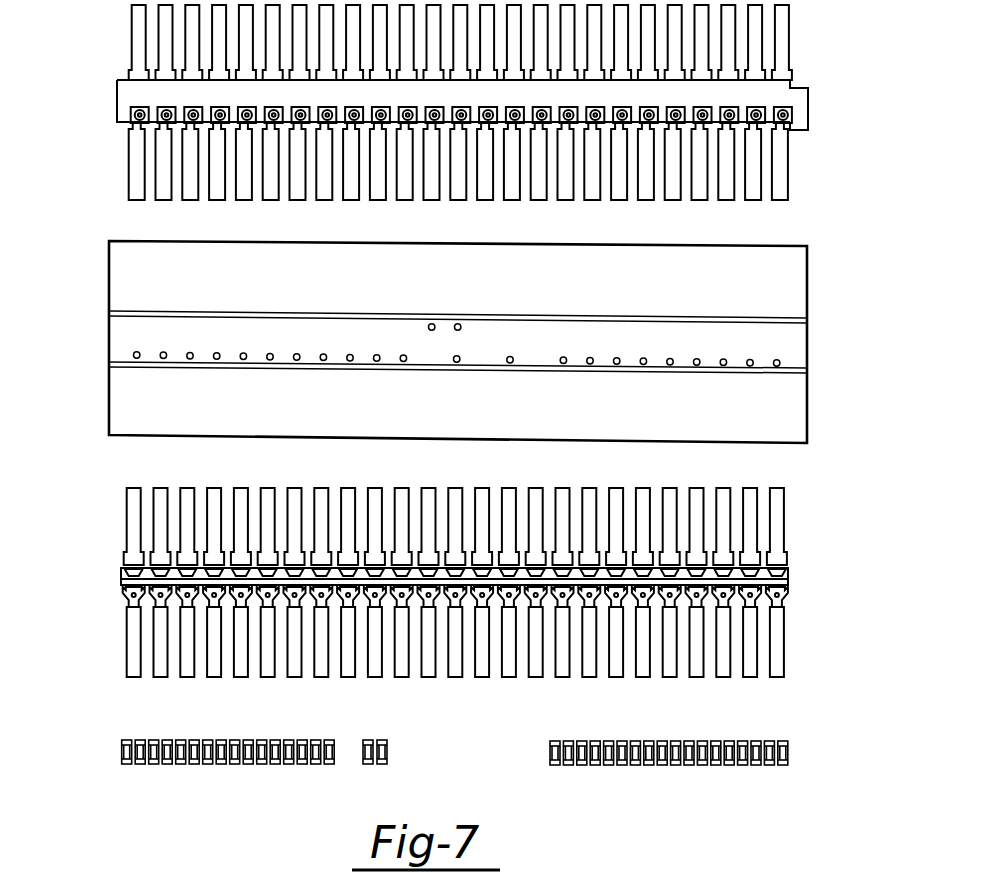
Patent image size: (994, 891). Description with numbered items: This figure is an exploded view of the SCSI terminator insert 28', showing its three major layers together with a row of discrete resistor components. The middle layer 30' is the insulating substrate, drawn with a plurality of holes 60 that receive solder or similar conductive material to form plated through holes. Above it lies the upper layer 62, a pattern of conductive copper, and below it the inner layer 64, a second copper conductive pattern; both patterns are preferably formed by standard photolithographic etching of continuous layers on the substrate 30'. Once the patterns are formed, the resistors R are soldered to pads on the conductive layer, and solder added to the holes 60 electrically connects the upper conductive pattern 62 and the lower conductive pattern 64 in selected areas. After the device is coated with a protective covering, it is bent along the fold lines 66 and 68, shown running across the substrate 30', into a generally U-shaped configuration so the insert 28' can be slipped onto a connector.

The SCSI terminator insert 28' is at (450, 412).
The middle layer 30' is at (496, 359).
The holes 60 is at (727, 365).
The upper layer 62 is at (822, 95).
The inner layer 64 is at (803, 600).
The fold line 66 is at (753, 317).
The fold line 68 is at (433, 368).
The resistors R is at (220, 765).